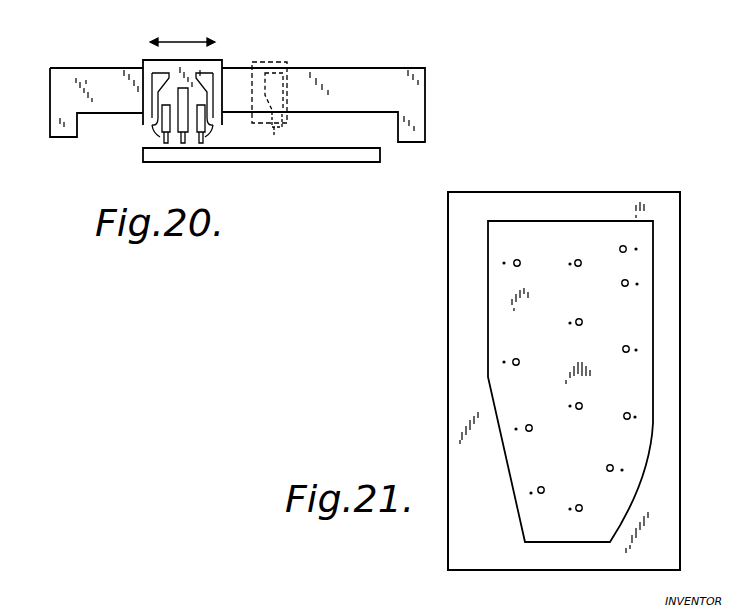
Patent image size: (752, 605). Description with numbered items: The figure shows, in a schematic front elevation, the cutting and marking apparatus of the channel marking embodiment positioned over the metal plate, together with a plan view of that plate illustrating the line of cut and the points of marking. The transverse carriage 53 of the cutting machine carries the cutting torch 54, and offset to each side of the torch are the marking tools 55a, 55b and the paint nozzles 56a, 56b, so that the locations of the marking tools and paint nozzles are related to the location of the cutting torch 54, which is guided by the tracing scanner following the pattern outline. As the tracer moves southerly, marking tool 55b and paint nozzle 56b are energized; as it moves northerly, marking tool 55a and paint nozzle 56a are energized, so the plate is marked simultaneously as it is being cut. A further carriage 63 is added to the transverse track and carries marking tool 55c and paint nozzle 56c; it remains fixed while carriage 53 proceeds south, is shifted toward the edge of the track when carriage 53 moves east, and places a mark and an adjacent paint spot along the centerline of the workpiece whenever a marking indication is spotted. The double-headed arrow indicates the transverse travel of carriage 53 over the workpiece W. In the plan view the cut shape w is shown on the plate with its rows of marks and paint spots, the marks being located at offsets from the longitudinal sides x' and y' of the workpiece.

In FIG. 20, the transverse carriage 53 is at (200, 68).
In FIG. 20, the cutting torch 54 is at (183, 137).
In FIG. 20, the marking tool 55a is at (163, 137).
In FIG. 20, the marking tool 55b is at (200, 137).
In FIG. 20, the marking tool 55c is at (272, 132).
In FIG. 20, the paint nozzle 56a is at (153, 131).
In FIG. 20, the paint nozzle 56b is at (212, 133).
In FIG. 20, the paint nozzle 56c is at (288, 128).
In FIG. 20, the carriage 63 is at (282, 60).
In FIG. 20, the workpiece W is at (377, 157).
In FIG. 21, the workpiece outline w is at (558, 235).
In FIG. 21, the longitudinal side x' is at (427, 324).
In FIG. 21, the longitudinal side y' is at (694, 330).